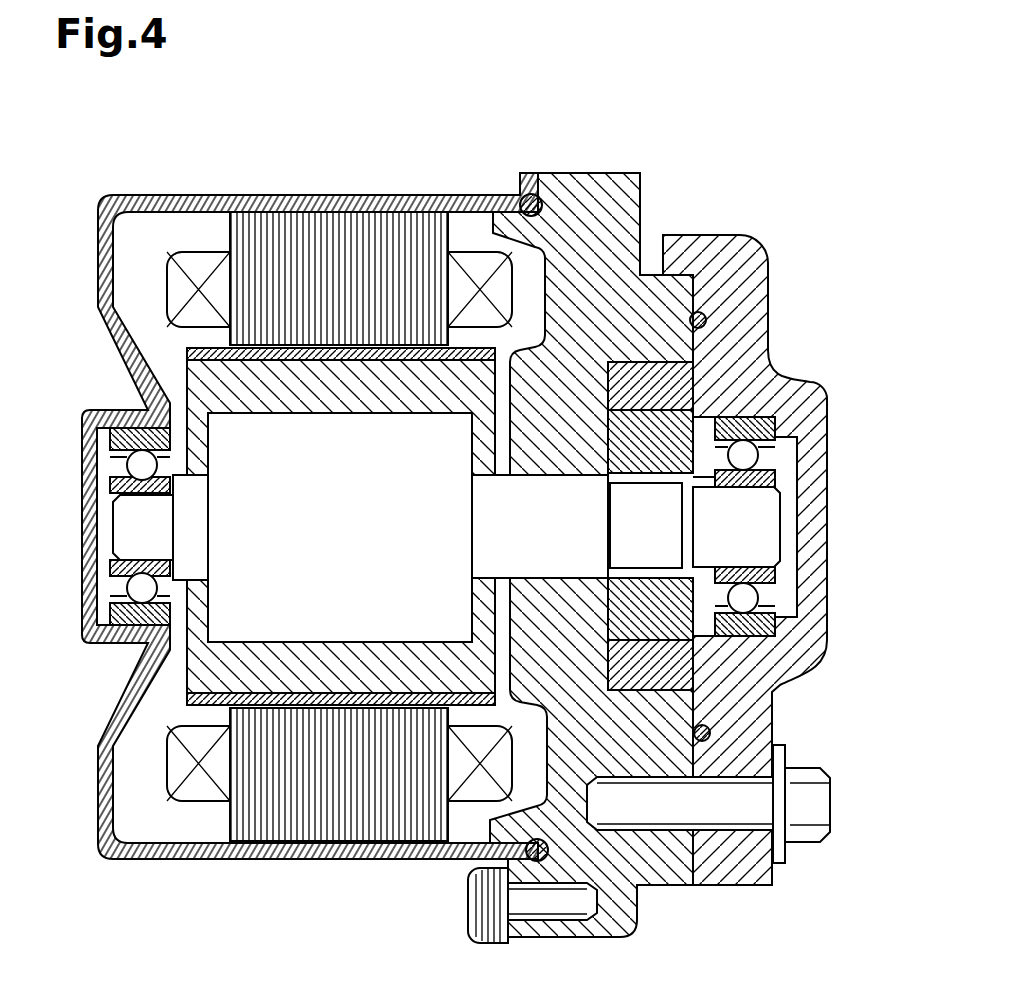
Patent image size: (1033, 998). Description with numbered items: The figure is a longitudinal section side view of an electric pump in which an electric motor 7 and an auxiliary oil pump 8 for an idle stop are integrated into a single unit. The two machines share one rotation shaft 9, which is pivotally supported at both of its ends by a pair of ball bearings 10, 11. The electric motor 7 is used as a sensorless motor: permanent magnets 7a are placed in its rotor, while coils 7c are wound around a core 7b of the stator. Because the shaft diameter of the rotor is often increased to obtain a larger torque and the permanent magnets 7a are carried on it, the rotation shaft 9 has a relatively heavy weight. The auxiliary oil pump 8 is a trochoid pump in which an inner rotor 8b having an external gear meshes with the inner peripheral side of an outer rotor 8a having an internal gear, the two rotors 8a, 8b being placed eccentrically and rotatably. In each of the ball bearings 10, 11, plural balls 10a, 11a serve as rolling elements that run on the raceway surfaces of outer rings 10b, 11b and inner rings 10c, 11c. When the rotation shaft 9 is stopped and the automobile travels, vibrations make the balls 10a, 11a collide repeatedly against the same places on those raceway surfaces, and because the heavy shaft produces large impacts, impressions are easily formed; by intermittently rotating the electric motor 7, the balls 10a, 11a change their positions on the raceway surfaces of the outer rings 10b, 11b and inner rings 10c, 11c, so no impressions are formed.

The electric motor 7 is at (160, 270).
The permanent magnets 7a is at (330, 395).
The core 7b is at (345, 243).
The coils 7c is at (490, 282).
The auxiliary oil pump 8 is at (627, 360).
The outer rotor 8a is at (650, 385).
The inner rotor 8b is at (645, 440).
The rotation shaft 9 is at (773, 545).
The ball bearing 10 is at (767, 414).
The balls 10a is at (745, 455).
The outer ring 10b is at (735, 418).
The inner ring 10c is at (758, 477).
The ball bearing 11 is at (92, 481).
The balls 11a is at (137, 467).
The outer ring 11b is at (123, 447).
The inner ring 11c is at (123, 487).